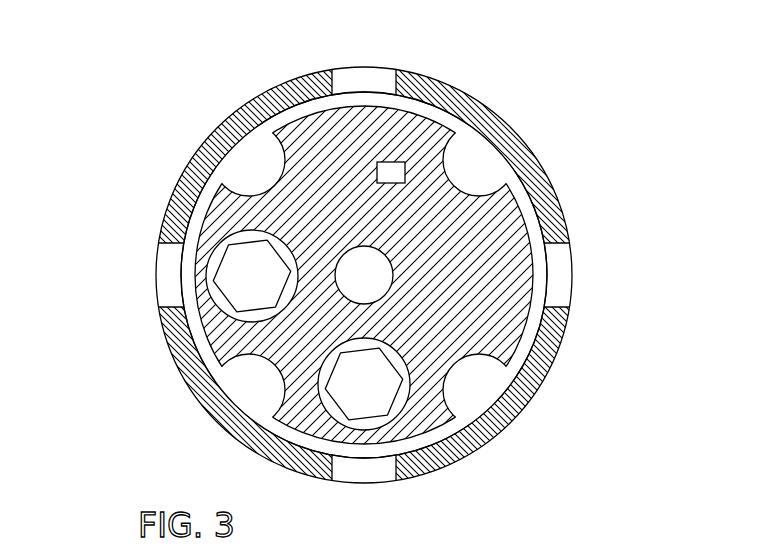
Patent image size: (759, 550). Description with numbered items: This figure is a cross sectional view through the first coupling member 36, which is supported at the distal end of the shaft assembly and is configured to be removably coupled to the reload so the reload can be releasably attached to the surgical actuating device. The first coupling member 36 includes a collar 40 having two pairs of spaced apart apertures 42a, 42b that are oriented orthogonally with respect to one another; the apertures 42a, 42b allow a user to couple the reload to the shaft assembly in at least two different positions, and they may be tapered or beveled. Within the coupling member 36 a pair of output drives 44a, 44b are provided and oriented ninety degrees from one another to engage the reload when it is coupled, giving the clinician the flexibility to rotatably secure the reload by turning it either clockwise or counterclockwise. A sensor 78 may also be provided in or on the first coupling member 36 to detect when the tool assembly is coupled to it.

The first coupling member 36 is at (463, 93).
The collar 40 is at (560, 203).
The apertures 42a is at (375, 67).
The apertures 42b is at (156, 286).
The output drive 44a is at (408, 378).
The output drive 44b is at (238, 260).
The sensor 78 is at (382, 162).